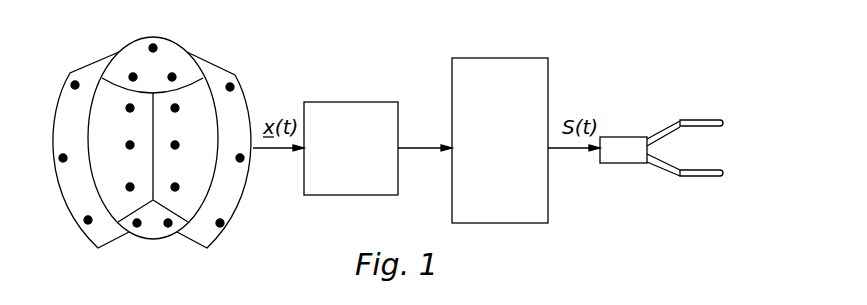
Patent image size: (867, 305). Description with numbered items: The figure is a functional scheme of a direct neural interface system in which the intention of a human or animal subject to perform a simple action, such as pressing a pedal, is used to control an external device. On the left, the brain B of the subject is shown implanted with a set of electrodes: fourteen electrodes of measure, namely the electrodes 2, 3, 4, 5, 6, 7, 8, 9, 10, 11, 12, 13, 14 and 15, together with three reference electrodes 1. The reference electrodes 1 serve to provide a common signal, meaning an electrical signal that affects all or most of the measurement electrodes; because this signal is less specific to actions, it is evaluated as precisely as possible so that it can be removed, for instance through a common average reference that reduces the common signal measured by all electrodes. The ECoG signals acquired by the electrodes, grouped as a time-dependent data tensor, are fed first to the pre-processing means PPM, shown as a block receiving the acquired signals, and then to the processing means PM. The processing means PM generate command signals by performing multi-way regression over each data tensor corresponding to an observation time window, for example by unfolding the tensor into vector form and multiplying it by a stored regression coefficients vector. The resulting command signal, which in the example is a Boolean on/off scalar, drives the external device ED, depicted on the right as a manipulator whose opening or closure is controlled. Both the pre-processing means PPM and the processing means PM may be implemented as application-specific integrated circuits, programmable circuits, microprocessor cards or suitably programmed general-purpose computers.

The brain B is at (100, 58).
The reference electrode 1 is at (152, 68).
The electrode of measure 2 is at (126, 78).
The electrode of measure 3 is at (121, 109).
The electrode of measure 4 is at (121, 146).
The electrode of measure 5 is at (73, 159).
The electrode of measure 6 is at (121, 188).
The electrode of measure 7 is at (94, 221).
The electrode of measure 8 is at (135, 214).
The electrode of measure 9 is at (179, 77).
The electrode of measure 10 is at (186, 109).
The electrode of measure 11 is at (186, 146).
The electrode of measure 12 is at (232, 168).
The electrode of measure 13 is at (186, 188).
The electrode of measure 14 is at (209, 228).
The electrode of measure 15 is at (172, 214).
The pre-processing means PPM is at (341, 102).
The processing means PM is at (502, 58).
The external device ED is at (662, 127).